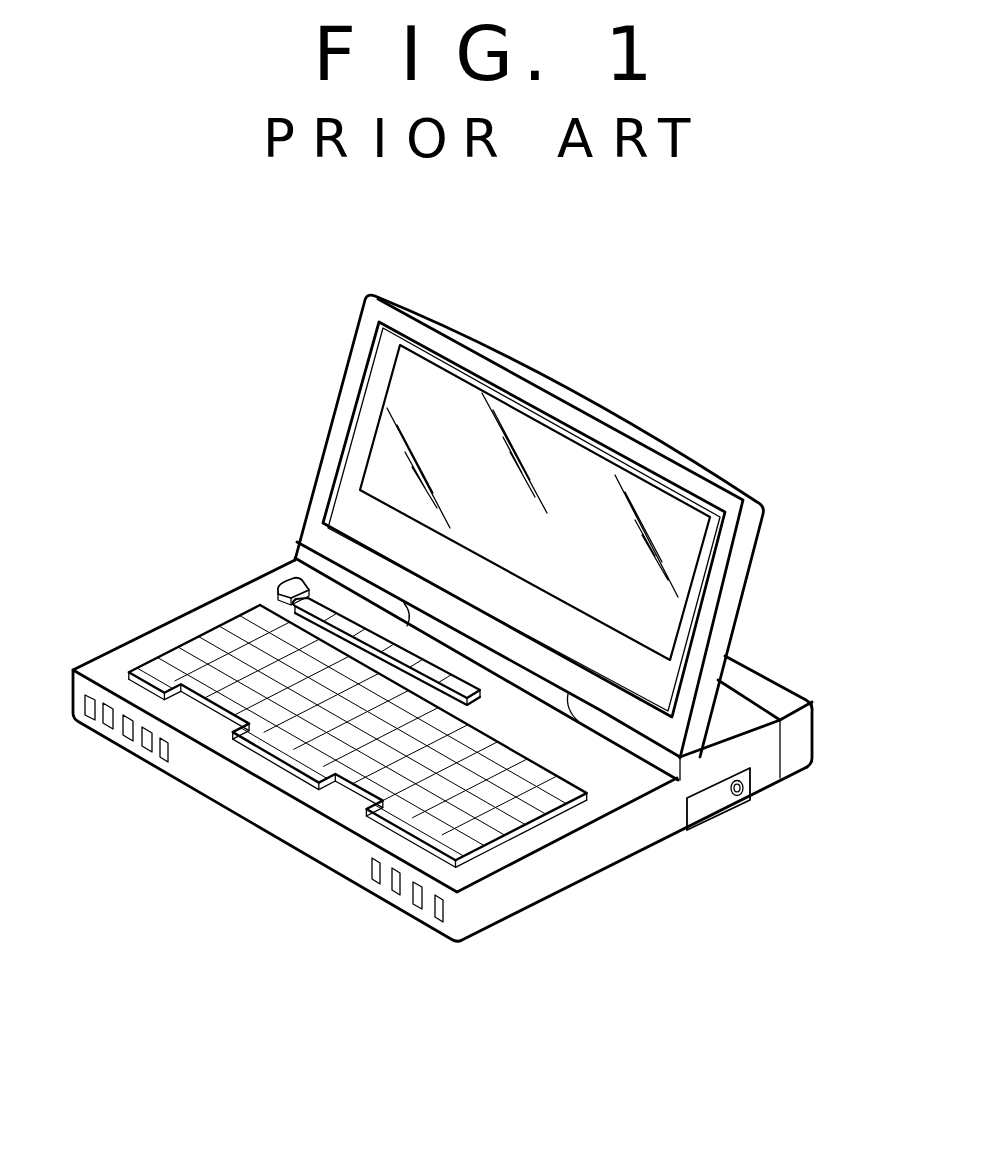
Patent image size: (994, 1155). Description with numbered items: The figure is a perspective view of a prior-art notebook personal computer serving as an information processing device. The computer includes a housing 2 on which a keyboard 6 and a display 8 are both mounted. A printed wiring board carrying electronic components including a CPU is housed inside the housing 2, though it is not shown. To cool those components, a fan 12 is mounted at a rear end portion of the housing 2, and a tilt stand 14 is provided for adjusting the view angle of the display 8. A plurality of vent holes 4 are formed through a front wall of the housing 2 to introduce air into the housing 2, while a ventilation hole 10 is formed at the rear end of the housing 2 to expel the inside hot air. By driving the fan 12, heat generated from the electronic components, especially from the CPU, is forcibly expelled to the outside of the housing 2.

The housing 2 is at (533, 910).
The vent holes 4 is at (147, 743).
The keyboard 6 is at (237, 651).
The display 8 is at (385, 466).
The ventilation hole 10 is at (781, 744).
The fan 12 is at (758, 688).
The tilt stand 14 is at (703, 808).